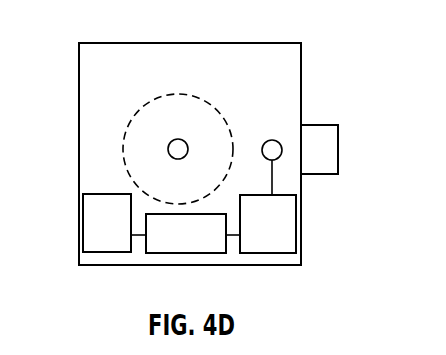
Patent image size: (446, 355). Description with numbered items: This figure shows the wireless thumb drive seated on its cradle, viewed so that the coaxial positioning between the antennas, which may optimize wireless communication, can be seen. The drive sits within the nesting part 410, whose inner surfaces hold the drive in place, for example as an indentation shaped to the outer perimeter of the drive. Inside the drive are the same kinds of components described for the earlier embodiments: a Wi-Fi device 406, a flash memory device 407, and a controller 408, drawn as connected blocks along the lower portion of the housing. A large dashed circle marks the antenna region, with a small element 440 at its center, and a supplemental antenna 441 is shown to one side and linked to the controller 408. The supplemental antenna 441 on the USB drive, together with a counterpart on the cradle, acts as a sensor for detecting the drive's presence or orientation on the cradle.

The nesting part 410 is at (105, 43).
The sensor / button 440 is at (167, 149).
The supplemental antenna 441 is at (272, 139).
The Wi-Fi device 406 is at (94, 253).
The flash memory device 407 is at (183, 253).
The controller 408 is at (283, 253).